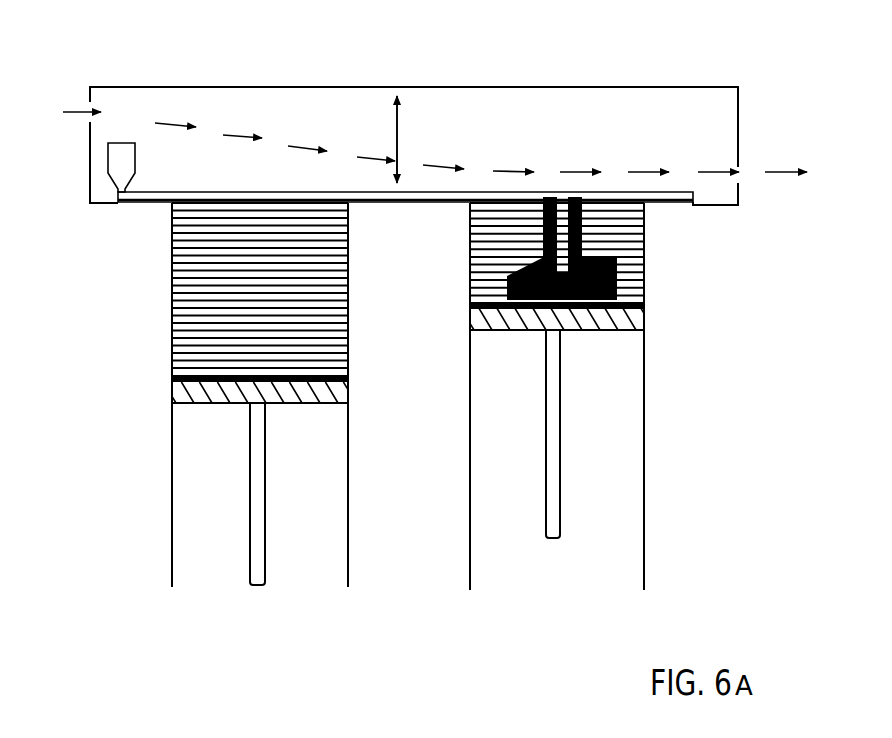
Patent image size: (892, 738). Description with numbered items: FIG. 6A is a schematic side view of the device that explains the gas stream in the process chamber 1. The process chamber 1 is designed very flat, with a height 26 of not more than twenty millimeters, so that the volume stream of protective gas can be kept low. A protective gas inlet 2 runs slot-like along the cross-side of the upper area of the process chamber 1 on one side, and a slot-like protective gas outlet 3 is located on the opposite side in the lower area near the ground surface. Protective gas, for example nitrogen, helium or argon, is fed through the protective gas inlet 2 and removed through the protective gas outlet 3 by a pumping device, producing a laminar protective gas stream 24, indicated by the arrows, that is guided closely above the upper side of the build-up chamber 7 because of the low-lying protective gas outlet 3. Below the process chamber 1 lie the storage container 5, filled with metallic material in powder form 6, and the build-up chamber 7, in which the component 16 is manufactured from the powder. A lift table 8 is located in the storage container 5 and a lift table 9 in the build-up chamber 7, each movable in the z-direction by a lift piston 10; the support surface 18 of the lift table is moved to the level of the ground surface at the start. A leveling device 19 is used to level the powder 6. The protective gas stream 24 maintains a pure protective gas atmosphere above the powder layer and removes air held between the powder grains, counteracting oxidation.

The process chamber 1 is at (548, 97).
The protective gas inlet 2 is at (88, 113).
The protective gas outlet 3 is at (742, 182).
The storage container 5 is at (172, 308).
The metallic material in powder form 6 is at (200, 269).
The build-up chamber 7 is at (636, 284).
The lift table of the storage container 8 is at (193, 392).
The lift table of the build-up chamber 9 is at (633, 317).
The lift piston 10 is at (260, 458).
The component 16 is at (617, 263).
The support surface 18 is at (177, 372).
The leveling device 19 is at (120, 158).
The laminar protective gas stream 24 is at (180, 123).
The height of the process chamber 26 is at (396, 120).